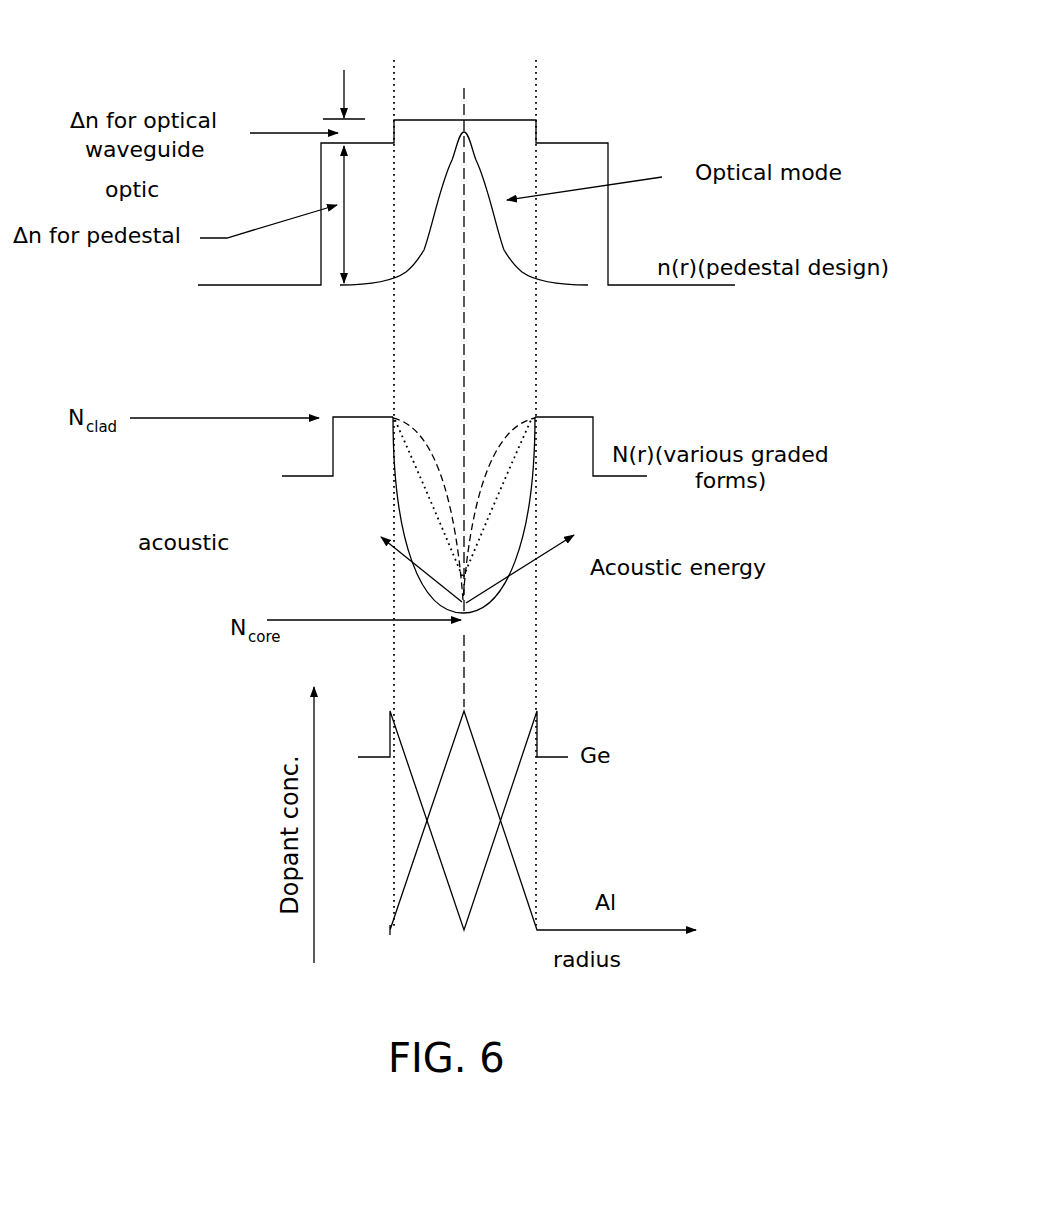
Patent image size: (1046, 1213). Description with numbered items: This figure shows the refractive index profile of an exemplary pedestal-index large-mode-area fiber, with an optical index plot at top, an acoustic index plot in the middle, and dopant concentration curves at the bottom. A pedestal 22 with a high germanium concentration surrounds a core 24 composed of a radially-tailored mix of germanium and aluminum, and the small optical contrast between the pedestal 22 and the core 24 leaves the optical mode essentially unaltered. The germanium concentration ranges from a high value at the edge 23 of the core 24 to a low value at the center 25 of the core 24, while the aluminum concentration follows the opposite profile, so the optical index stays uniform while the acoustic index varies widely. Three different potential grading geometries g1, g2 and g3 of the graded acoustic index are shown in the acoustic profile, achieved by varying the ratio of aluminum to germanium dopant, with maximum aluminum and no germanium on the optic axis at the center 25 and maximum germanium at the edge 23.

The pedestal 22 is at (583, 143).
The edge of the core 23 is at (393, 64).
The core 24 is at (495, 77).
The center of the core 25 is at (464, 100).
The grading geometry g1 is at (435, 453).
The grading geometry g2 is at (513, 473).
The grading geometry g3 is at (530, 511).